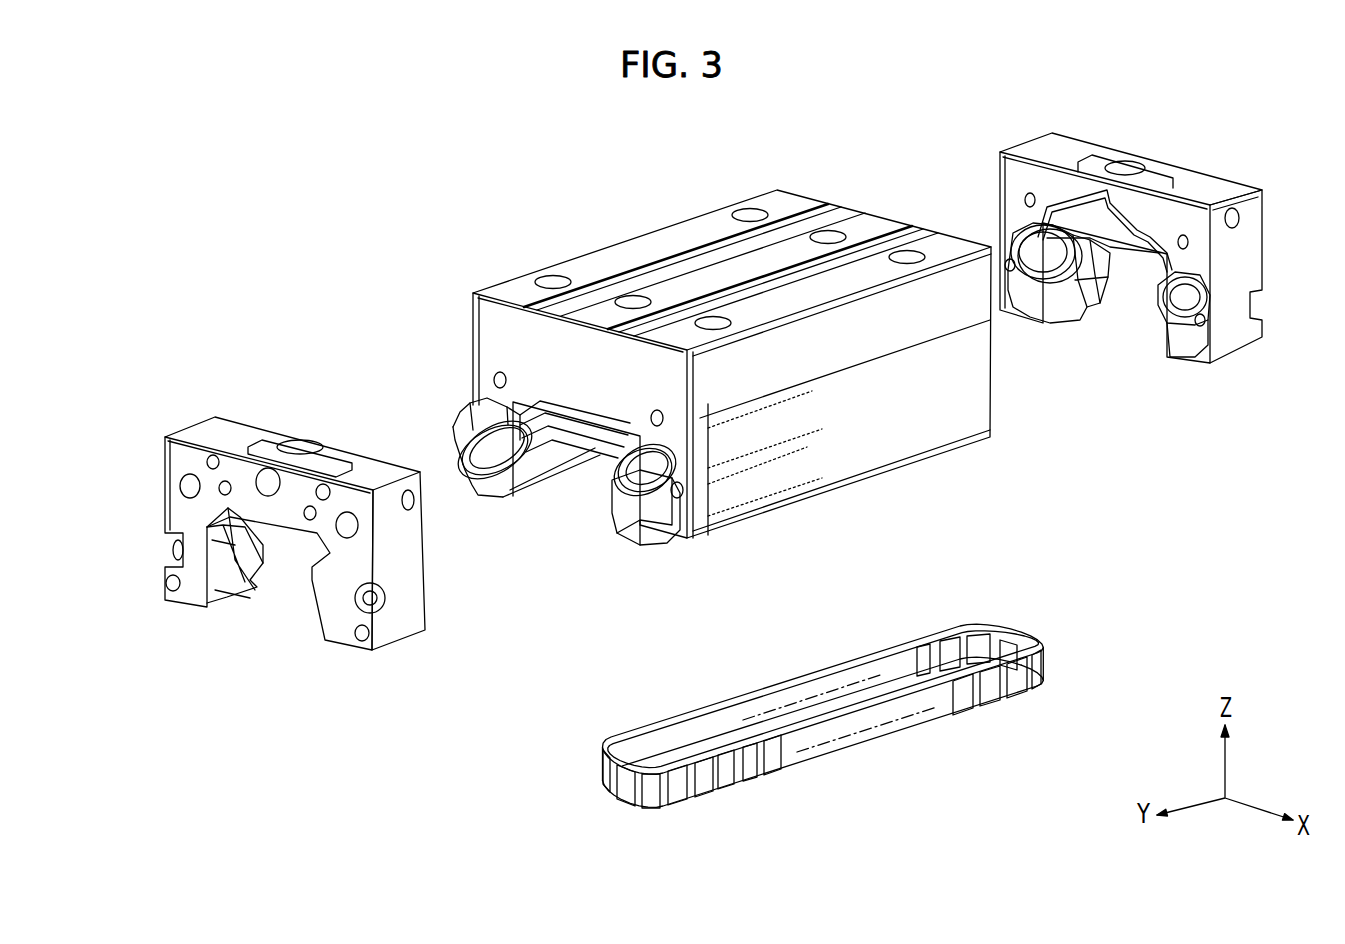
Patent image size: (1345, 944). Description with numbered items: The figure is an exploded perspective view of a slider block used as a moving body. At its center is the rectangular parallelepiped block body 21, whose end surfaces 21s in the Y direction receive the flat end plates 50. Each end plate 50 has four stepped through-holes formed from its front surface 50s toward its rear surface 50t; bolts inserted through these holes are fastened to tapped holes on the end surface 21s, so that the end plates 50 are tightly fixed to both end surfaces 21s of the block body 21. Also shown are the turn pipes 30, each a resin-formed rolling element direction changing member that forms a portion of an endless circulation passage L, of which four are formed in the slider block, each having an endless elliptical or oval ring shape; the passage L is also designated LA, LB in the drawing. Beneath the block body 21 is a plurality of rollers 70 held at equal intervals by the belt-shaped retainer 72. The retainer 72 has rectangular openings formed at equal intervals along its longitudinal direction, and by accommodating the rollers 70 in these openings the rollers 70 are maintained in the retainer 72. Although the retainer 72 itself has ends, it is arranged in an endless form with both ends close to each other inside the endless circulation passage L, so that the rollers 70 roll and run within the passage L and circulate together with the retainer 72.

The block body 21 is at (704, 348).
The end surface 21s is at (478, 315).
The turn pipe 30 is at (443, 418).
The end plate 50 is at (691, 404).
The front surface 50s is at (175, 507).
The rear surface 50t is at (1063, 180).
The roller 70 is at (753, 775).
The retainer 72 is at (807, 770).
The endless circulation passage L is at (817, 415).